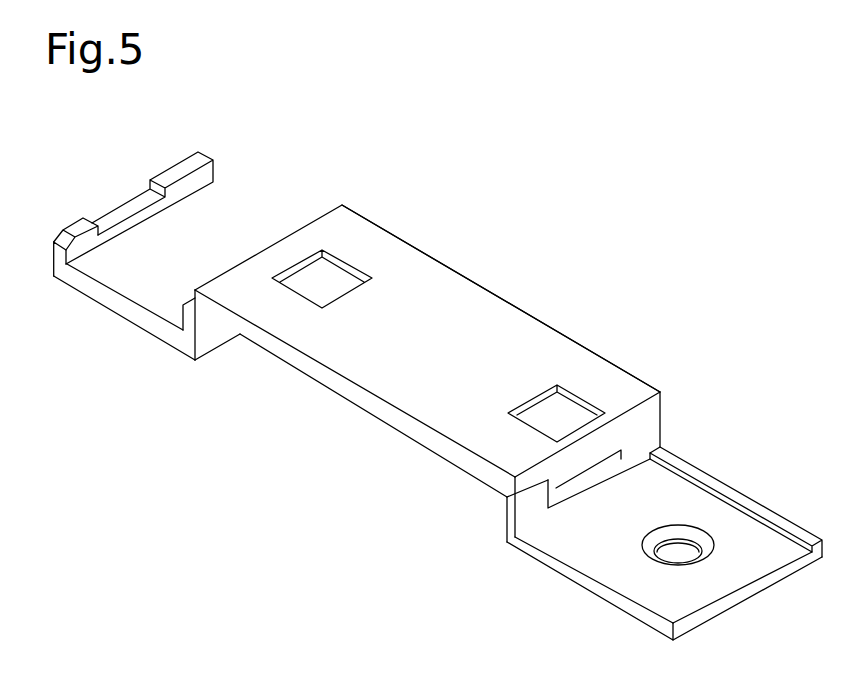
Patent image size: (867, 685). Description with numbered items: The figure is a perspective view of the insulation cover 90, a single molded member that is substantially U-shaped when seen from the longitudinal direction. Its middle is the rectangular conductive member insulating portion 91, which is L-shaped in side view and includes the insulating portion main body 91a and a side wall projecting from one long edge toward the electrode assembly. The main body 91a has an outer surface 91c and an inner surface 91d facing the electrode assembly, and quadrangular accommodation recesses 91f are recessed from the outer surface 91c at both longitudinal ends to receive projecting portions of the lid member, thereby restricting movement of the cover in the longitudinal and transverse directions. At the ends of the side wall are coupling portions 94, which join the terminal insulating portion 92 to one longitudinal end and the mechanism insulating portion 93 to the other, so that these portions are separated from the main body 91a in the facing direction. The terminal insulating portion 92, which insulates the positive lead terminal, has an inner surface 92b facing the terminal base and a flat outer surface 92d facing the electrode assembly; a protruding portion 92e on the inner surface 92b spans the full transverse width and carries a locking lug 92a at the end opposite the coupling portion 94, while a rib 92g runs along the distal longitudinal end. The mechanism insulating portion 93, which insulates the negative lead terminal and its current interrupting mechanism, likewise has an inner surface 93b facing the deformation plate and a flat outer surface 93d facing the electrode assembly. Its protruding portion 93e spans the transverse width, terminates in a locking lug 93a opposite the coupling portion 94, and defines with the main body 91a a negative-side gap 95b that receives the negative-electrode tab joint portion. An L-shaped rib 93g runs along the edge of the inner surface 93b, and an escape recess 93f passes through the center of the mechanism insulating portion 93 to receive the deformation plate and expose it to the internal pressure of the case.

The insulation cover 90 is at (505, 297).
The conductive member insulating portion 91 is at (371, 384).
The insulating portion main body 91a is at (432, 267).
The outer surface 91c is at (417, 407).
The inner surface 91d is at (297, 377).
The accommodation recess 91f is at (332, 287).
The terminal insulating portion 92 is at (293, 233).
The locking lug 92a is at (190, 297).
The inner surface 92b is at (100, 270).
The outer surface 92d is at (123, 323).
The protruding portion 92e is at (213, 343).
The rib 92g is at (183, 167).
The mechanism insulating portion 93 is at (717, 512).
The locking lug 93a is at (507, 497).
The inner surface 93b is at (563, 553).
The outer surface 93d is at (620, 608).
The protruding portion 93e is at (568, 490).
The escape recess 93f is at (687, 560).
The rib 93g is at (730, 590).
The coupling portion 94 is at (650, 422).
The negative-side gap 95b is at (561, 478).